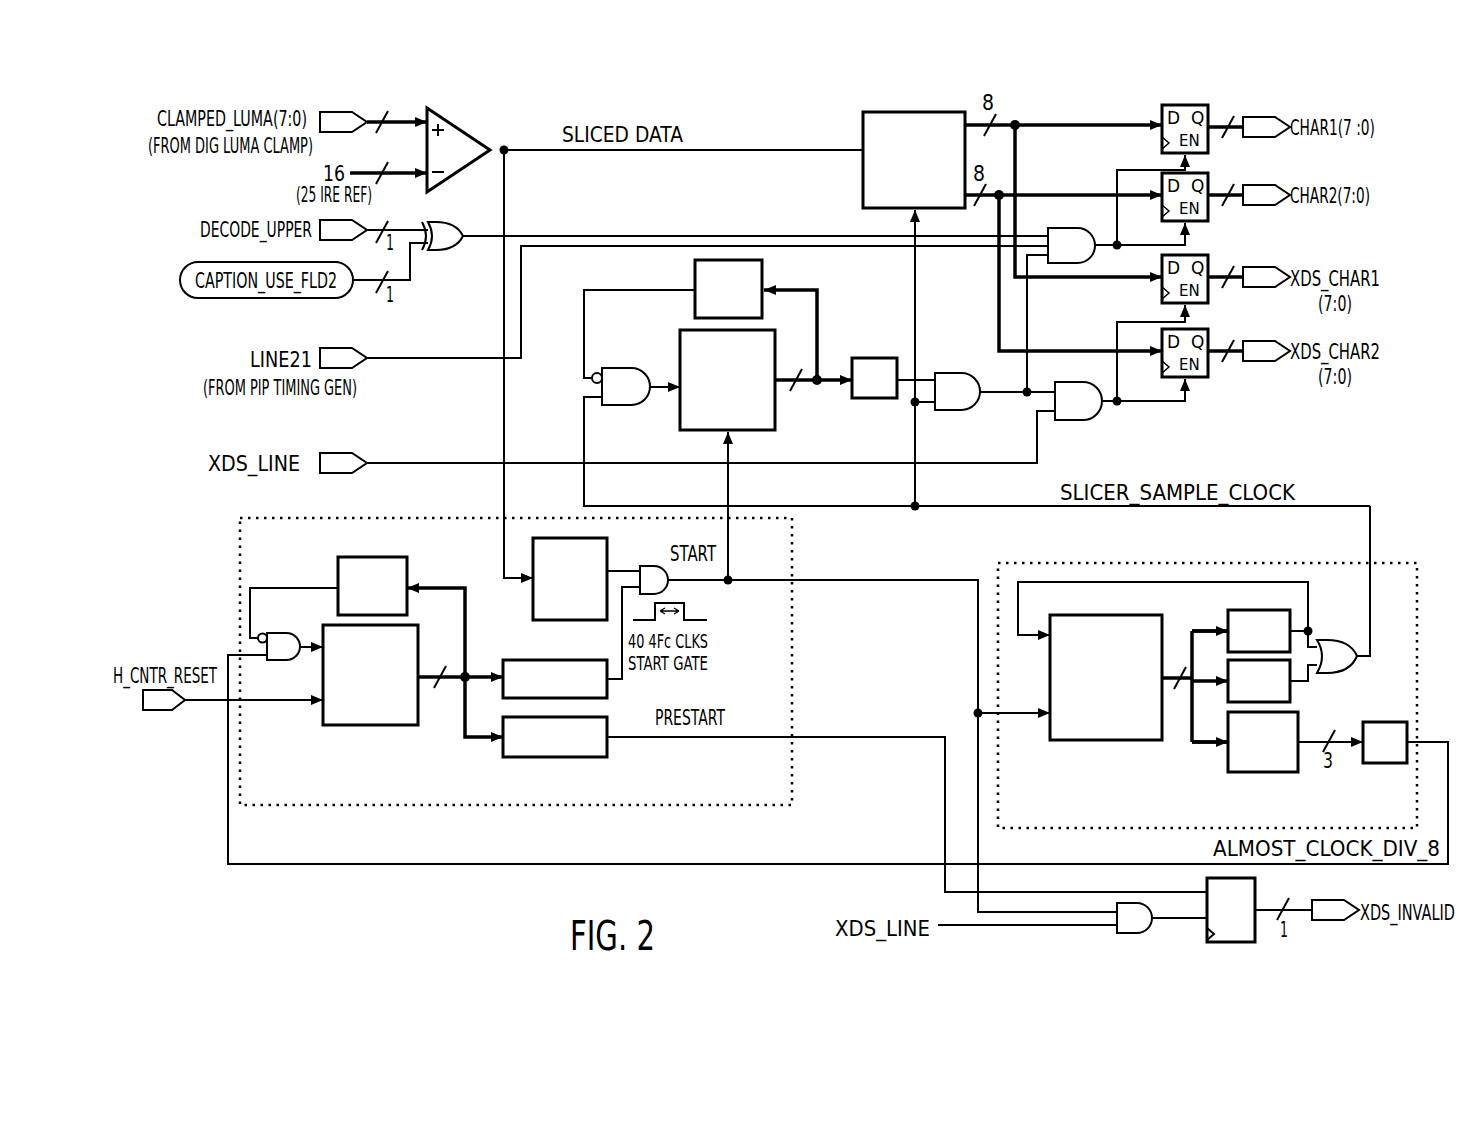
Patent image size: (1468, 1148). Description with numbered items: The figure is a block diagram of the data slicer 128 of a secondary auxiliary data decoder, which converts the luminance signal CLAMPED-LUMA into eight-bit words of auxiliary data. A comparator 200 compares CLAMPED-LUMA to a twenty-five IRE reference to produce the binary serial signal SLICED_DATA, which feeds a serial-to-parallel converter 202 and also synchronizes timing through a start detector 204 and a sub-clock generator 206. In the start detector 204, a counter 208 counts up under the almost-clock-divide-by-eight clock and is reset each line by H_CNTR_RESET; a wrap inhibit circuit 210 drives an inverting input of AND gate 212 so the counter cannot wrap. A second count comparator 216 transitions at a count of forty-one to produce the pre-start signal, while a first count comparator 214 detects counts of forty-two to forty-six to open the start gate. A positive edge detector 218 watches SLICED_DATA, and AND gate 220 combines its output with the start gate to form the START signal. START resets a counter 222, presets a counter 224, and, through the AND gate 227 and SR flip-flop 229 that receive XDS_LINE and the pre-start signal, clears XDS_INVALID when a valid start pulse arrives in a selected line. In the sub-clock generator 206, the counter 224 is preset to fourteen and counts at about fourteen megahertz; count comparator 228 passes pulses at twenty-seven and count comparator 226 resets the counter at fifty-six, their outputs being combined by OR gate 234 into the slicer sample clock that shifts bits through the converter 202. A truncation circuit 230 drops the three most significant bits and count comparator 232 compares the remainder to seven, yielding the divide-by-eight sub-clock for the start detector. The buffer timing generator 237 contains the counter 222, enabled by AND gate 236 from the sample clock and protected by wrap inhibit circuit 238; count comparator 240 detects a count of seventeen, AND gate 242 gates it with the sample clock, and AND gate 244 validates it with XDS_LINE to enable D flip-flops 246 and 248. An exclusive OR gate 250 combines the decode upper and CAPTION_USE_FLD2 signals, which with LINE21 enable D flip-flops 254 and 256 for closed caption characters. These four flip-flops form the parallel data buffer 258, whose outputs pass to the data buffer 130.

The closed caption data slicer 128 is at (165, 598).
The data buffer 130 is at (1424, 315).
The comparator 200 is at (462, 126).
The serial-to-parallel converter 202 is at (863, 190).
The start detector 204 is at (792, 668).
The sub-clock generator 206 is at (1393, 563).
The counter 208 is at (383, 725).
The wrap inhibit circuit 210 is at (407, 560).
The AND gate 212 is at (274, 632).
The first count comparator 214 is at (548, 660).
The second count comparator 216 is at (585, 757).
The positive edge detector 218 is at (607, 541).
The AND gate 220 is at (672, 584).
The counter 222 is at (760, 430).
The counter 224 is at (1105, 617).
The count comparator 226 is at (1235, 610).
The AND gate 227 is at (1118, 935).
The count comparator 228 is at (1290, 690).
The SR latch 229 is at (1205, 922).
The truncation circuit 230 is at (1298, 772).
The count comparator 232 is at (1383, 720).
The OR gate 234 is at (1340, 640).
The AND gate 236 is at (625, 375).
The buffer timing generator 237 is at (568, 380).
The wrap inhibit circuit 238 is at (764, 268).
The count comparator 240 is at (880, 358).
The AND gate 242 is at (950, 373).
The AND gate 244 is at (1090, 413).
The D flip-flop 246 is at (1160, 290).
The D flip-flop 248 is at (1200, 378).
The exclusive OR gate 250 is at (458, 224).
The D flip-flop 254 is at (1210, 153).
The D flip-flop 256 is at (1207, 223).
The parallel data buffer 258 is at (1147, 108).